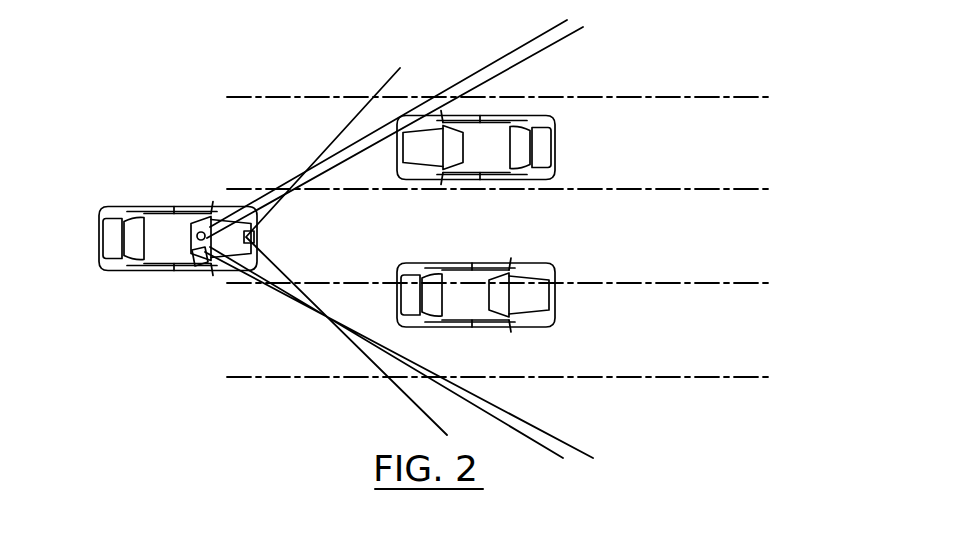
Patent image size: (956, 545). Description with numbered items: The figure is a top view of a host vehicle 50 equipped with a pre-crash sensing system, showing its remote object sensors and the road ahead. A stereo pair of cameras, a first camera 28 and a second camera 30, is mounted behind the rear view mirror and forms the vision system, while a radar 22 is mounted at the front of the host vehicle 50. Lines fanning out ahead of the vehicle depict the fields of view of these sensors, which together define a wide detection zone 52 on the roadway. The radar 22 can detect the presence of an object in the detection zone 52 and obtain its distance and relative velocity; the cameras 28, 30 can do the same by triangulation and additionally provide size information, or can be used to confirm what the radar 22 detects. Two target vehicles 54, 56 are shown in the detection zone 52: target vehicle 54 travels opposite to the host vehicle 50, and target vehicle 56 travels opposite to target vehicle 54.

The radar 22 is at (222, 212).
The first camera 28 is at (207, 212).
The second camera 30 is at (178, 267).
The host vehicle 50 is at (186, 210).
The detection zone 52 is at (525, 232).
The target vehicle 54 is at (557, 144).
The target vehicle 56 is at (556, 302).